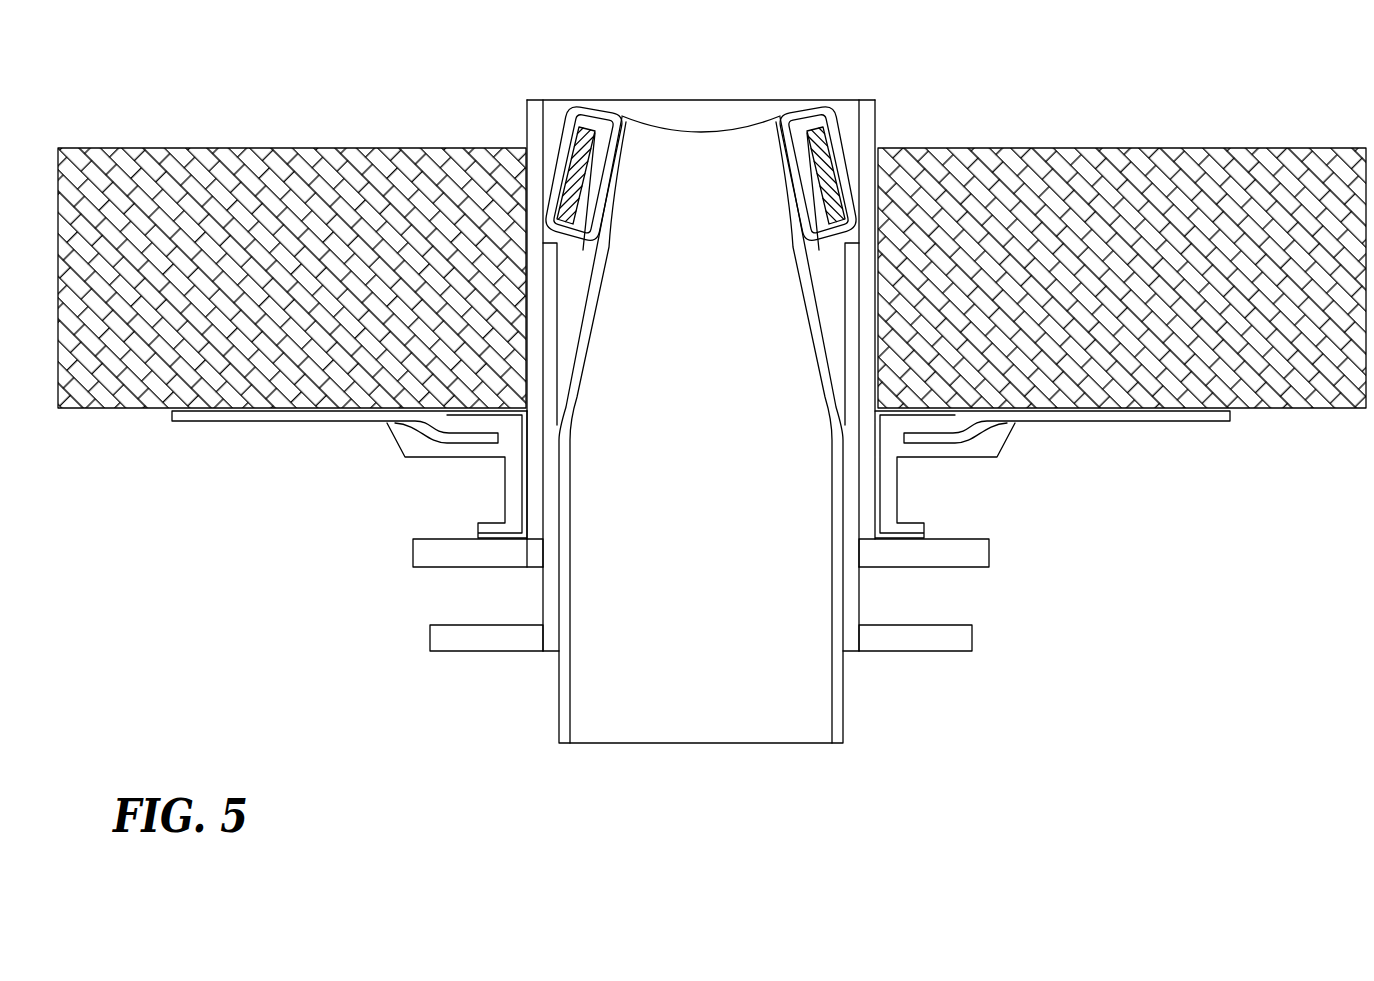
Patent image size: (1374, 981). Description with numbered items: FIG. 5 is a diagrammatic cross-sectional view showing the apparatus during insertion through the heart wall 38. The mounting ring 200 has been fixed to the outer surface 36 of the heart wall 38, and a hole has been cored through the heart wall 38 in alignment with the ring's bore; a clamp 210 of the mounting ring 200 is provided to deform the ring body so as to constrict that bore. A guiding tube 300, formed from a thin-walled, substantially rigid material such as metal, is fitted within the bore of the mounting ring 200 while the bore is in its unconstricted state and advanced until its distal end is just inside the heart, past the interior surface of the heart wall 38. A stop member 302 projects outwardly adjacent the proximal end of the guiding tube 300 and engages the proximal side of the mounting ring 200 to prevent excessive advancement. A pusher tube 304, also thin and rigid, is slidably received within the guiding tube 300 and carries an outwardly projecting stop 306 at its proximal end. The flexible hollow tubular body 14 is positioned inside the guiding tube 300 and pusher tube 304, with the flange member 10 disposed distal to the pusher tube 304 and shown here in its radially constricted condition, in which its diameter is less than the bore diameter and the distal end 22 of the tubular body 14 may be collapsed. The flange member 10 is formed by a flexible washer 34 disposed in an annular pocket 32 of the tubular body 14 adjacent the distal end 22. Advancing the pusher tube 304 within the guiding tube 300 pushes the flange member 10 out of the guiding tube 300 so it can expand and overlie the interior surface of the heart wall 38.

The flange member 10 is at (562, 127).
The hollow tubular body 14 is at (843, 727).
The distal end 22 is at (818, 110).
The annular pocket 32 is at (840, 122).
The flexible washer 34 is at (592, 130).
The outer surface 36 is at (131, 178).
The heart wall 38 is at (1125, 172).
The mounting ring 200 is at (1155, 424).
The clamp 210 is at (890, 485).
The guiding tube 300 is at (868, 132).
The stop member 302 is at (972, 557).
The pusher tube 304 is at (852, 597).
The stop 306 is at (927, 645).